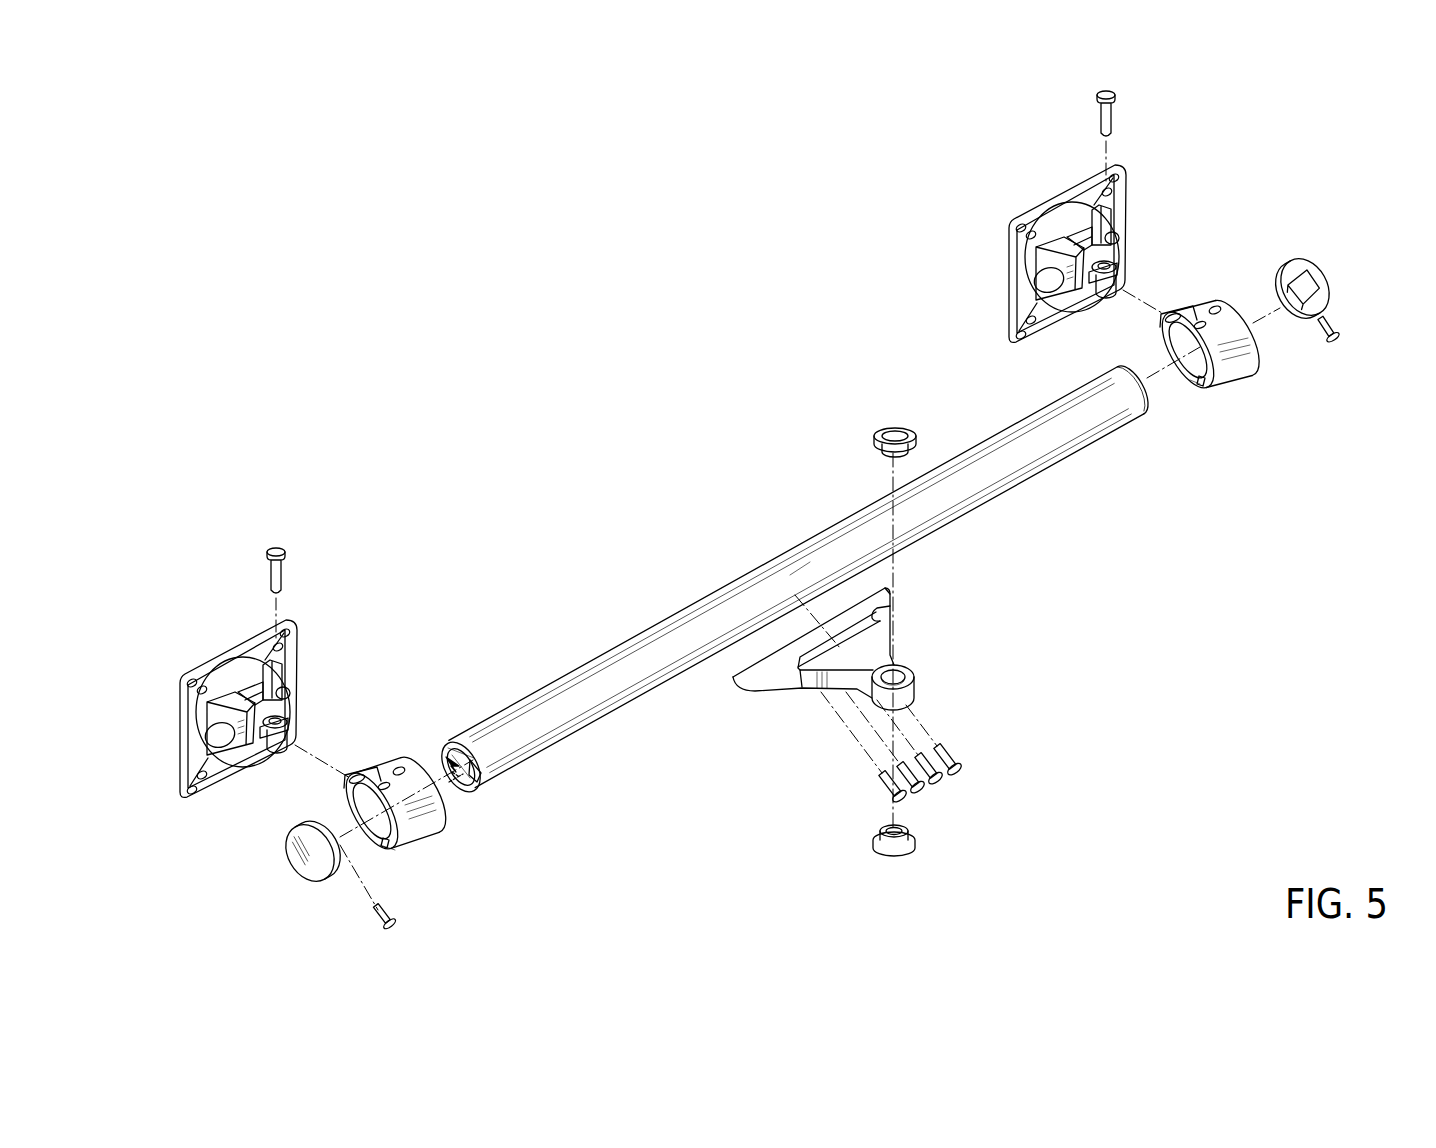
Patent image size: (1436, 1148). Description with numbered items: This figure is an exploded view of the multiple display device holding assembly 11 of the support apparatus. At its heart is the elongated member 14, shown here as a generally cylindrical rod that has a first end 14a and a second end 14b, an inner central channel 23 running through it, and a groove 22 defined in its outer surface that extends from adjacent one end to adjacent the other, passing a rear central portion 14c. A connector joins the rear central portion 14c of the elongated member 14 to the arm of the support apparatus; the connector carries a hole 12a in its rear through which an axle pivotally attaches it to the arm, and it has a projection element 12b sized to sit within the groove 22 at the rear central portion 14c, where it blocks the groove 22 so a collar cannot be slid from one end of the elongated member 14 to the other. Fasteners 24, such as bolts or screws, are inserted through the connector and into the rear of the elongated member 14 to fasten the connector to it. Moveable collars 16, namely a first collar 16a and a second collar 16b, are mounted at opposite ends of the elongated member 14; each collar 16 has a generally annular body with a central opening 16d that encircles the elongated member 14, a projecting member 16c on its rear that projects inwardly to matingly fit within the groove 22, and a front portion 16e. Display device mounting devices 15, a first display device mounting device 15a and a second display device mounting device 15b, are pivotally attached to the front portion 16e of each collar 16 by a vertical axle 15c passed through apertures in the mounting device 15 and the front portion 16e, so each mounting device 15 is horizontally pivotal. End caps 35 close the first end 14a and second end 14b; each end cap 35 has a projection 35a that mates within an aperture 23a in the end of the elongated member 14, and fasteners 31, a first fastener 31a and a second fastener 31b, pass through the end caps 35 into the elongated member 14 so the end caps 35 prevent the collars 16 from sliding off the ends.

The multiple display device holding assembly 11 is at (527, 563).
The hole 12a is at (914, 677).
The projection element 12b is at (877, 601).
The elongated member 14 is at (684, 622).
The first end 14a is at (1145, 385).
The second end 14b is at (437, 776).
The rear central portion 14c is at (800, 570).
The display device mounting device 15 is at (652, 480).
The first display device mounting device 15a is at (1010, 283).
The second display device mounting device 15b is at (297, 656).
The vertical axle 15c is at (285, 572).
The collar 16 is at (794, 569).
The first collar 16a is at (1250, 349).
The second collar 16b is at (375, 782).
The projecting member 16c is at (392, 848).
The central opening 16d is at (350, 815).
The front portion 16e is at (357, 778).
The groove 22 is at (476, 808).
The inner central channel 23 is at (441, 760).
The aperture 23a is at (478, 790).
The fasteners 24 is at (941, 745).
The fastener 31 is at (846, 611).
The first fastener 31a is at (1330, 320).
The second fastener 31b is at (378, 908).
The end cap 35 is at (800, 556).
The projection 35a is at (337, 842).